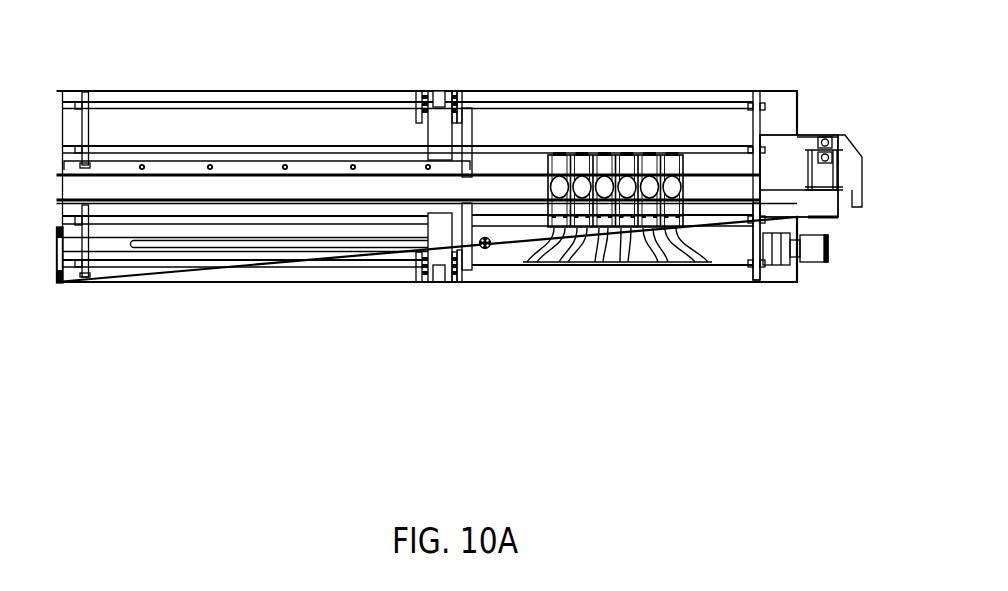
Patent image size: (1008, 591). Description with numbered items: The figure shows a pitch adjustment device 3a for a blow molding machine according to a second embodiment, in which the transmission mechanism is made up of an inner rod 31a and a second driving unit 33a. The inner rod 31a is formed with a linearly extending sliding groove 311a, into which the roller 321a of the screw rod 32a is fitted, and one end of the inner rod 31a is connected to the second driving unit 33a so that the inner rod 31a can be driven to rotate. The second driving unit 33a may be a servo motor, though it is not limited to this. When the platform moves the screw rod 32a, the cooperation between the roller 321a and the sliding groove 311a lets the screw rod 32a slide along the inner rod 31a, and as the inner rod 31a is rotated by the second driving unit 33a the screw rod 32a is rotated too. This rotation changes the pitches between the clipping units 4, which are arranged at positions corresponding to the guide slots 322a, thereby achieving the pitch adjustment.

The feeding device 3a is at (570, 265).
The inner rod 31a is at (113, 243).
The sliding groove 311a is at (212, 243).
The screw rod 32a is at (732, 248).
The roller 321a is at (488, 248).
The guide slots 322a is at (637, 258).
The second driving unit 33a is at (817, 257).
The clipping units 4 is at (615, 146).